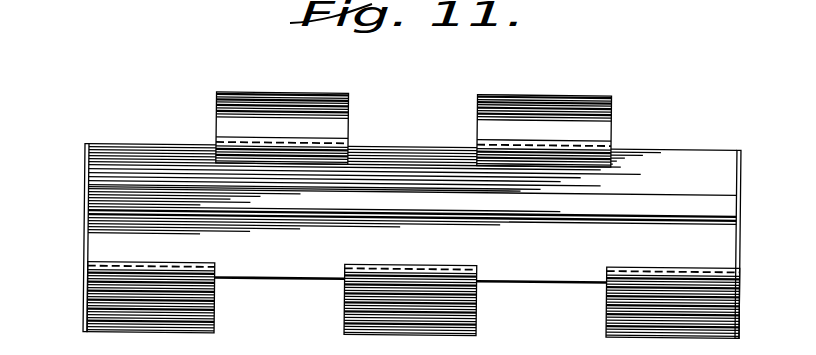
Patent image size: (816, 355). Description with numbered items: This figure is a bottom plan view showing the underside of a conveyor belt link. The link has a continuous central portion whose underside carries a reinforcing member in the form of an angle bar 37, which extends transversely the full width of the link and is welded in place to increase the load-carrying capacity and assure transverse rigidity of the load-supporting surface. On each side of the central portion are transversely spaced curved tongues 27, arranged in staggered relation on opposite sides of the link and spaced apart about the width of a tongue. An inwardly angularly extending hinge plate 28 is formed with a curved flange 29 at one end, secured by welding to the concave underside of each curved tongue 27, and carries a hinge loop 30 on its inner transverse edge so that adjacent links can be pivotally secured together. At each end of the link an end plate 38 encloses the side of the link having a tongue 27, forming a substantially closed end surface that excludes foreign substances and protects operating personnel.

The curved tongues 27 is at (476, 98).
The hinge plate 28 is at (345, 300).
The curved flange 29 is at (607, 326).
The hinge loop 30 is at (607, 272).
The angle bar 37 is at (683, 193).
The end plate 38 is at (756, 241).